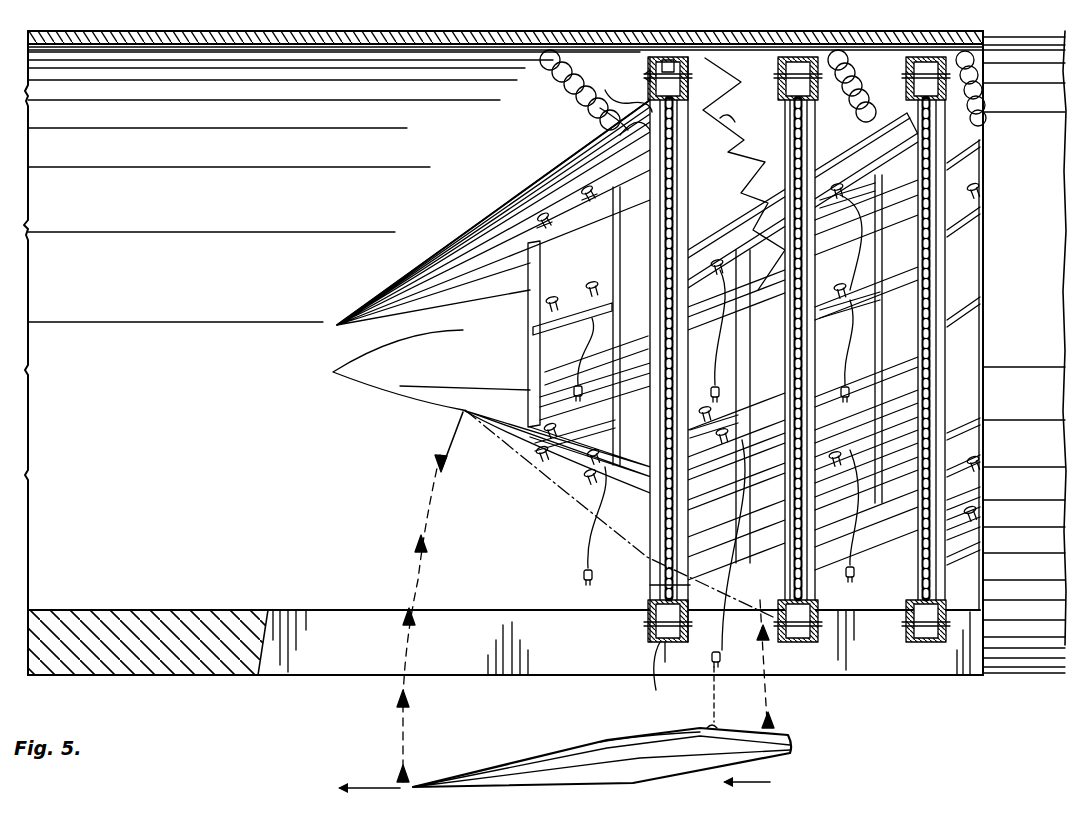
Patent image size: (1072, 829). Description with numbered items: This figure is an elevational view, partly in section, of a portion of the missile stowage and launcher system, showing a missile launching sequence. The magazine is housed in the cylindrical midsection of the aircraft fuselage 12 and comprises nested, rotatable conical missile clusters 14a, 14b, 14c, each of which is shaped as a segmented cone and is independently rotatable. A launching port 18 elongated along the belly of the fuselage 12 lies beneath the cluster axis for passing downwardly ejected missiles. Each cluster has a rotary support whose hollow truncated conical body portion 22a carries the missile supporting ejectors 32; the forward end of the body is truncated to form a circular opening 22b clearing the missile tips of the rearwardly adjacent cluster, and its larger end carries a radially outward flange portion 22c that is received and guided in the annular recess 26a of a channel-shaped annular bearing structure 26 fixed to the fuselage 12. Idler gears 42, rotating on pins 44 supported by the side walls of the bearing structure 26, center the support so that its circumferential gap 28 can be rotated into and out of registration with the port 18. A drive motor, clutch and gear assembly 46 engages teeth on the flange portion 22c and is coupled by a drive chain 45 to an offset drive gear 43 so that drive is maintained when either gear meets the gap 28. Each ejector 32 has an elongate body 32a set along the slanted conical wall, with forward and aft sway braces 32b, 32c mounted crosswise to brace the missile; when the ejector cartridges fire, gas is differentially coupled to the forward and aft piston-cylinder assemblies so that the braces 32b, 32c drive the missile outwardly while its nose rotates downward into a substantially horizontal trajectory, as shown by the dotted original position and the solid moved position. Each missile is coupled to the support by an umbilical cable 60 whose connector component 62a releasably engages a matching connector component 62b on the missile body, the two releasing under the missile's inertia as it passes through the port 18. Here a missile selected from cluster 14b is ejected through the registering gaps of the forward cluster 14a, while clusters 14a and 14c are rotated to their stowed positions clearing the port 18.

The fuselage 12 is at (350, 31).
The forwardmost missile cluster 14a is at (490, 178).
The missile cluster 14b is at (752, 78).
The missile cluster 14c is at (880, 78).
The launching port 18 is at (270, 628).
The conical body portion 22a is at (628, 510).
The circular opening 22b is at (525, 407).
The flange portion 22c is at (648, 590).
The annular bearing structure 26 is at (680, 56).
The annular recess 26a is at (652, 106).
The circumferential gap 28 is at (812, 117).
The missile supporting ejector 32 is at (545, 262).
The elongate ejector body 32a is at (553, 242).
The forward sway brace 32b is at (535, 218).
The aft sway brace 32c is at (585, 186).
The idler gear 42 is at (664, 644).
The drive gear 43 is at (662, 58).
The pin 44 is at (645, 74).
The drive chain 45 is at (722, 128).
The drive motor, clutch and gear assembly 46 is at (765, 180).
The umbilical cable 60 is at (590, 352).
The connector component 62a is at (587, 562).
The connector component 62b is at (705, 724).